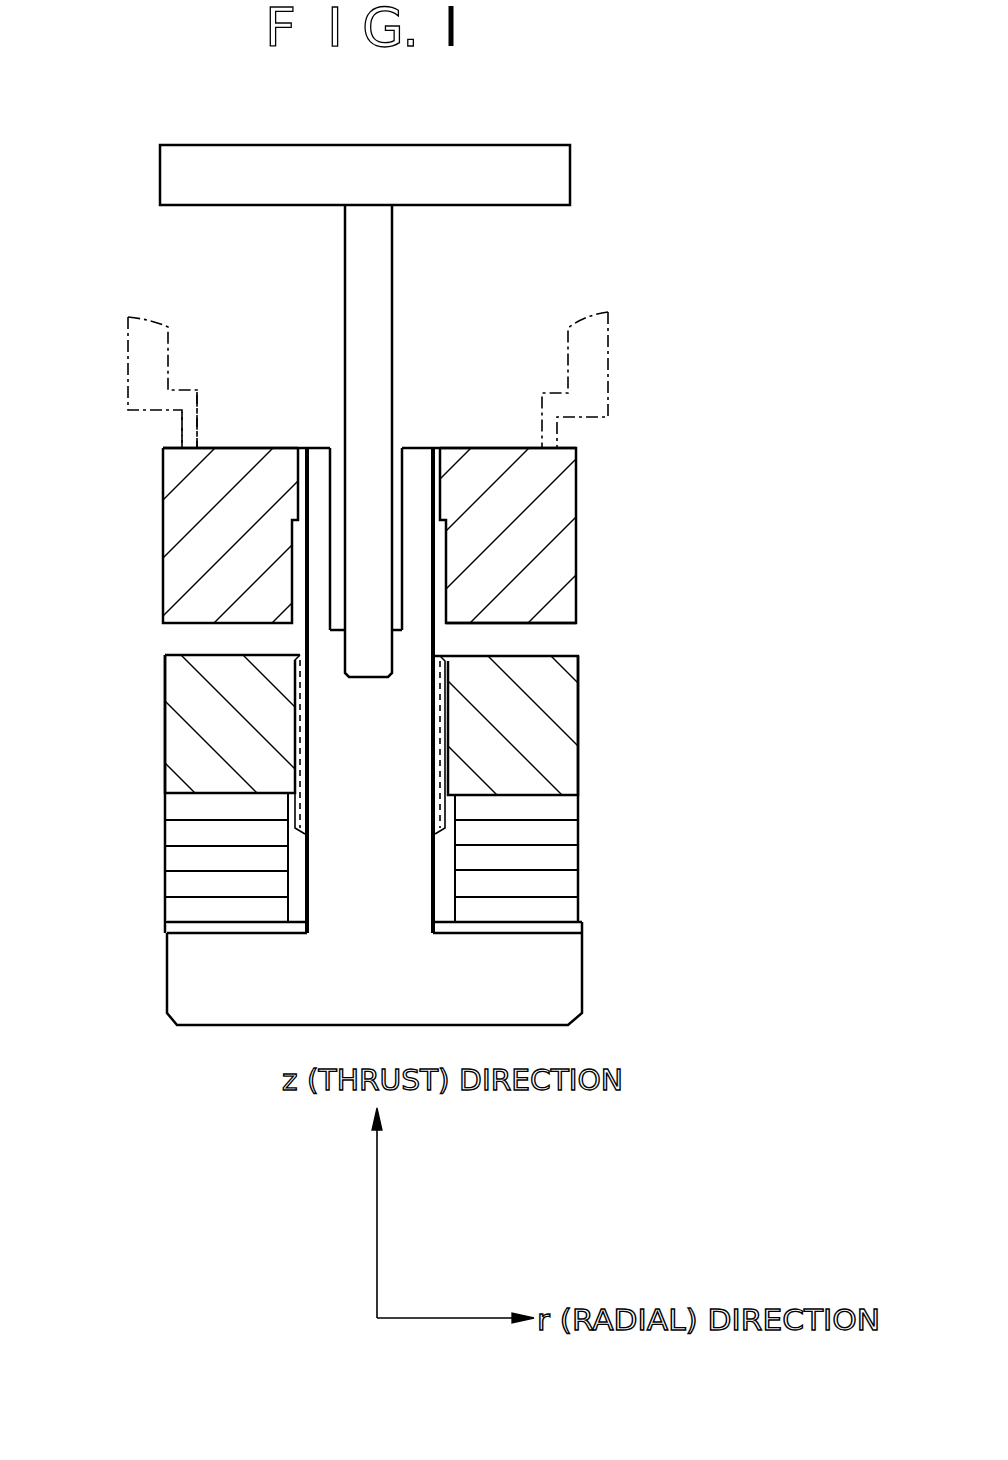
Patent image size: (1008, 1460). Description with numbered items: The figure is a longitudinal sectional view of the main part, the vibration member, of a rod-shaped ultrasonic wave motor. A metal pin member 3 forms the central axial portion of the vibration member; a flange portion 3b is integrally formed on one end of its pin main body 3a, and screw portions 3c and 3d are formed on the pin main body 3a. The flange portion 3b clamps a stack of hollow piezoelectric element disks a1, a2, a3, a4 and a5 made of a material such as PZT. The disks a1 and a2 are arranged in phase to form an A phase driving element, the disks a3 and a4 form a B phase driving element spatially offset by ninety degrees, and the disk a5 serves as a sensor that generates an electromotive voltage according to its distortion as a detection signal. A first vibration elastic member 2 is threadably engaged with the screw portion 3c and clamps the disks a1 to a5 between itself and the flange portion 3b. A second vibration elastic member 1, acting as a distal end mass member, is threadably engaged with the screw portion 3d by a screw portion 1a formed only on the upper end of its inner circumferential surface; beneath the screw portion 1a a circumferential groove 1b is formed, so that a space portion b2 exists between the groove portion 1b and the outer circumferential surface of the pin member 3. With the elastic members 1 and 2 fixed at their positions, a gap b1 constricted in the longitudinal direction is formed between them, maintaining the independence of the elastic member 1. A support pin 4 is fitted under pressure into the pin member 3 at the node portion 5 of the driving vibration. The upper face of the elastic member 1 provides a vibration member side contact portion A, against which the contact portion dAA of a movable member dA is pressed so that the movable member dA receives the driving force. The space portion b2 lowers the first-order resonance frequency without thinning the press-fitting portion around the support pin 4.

The second vibration elastic member 1 is at (114, 546).
The screw portion 1a is at (430, 470).
The circumferential groove 1b is at (446, 556).
The gap b1 is at (528, 638).
The space portion b2 is at (468, 482).
The vibration member side contact portion A is at (194, 450).
The movable member dA is at (137, 346).
The contact portion dAA is at (190, 447).
The first vibration elastic member 2 is at (175, 720).
The pin member 3 is at (393, 753).
The pin main body 3a is at (383, 839).
The flange portion 3b is at (567, 978).
The screw portion 3c is at (433, 820).
The screw portion 3d is at (298, 480).
The support pin 4 is at (372, 258).
The node portion 5 is at (355, 640).
The piezoelectric element disk a1 is at (567, 806).
The piezoelectric element disk a2 is at (567, 836).
The piezoelectric element disk a3 is at (567, 861).
The piezoelectric element disk a4 is at (563, 885).
The piezoelectric element disk a5 is at (565, 910).